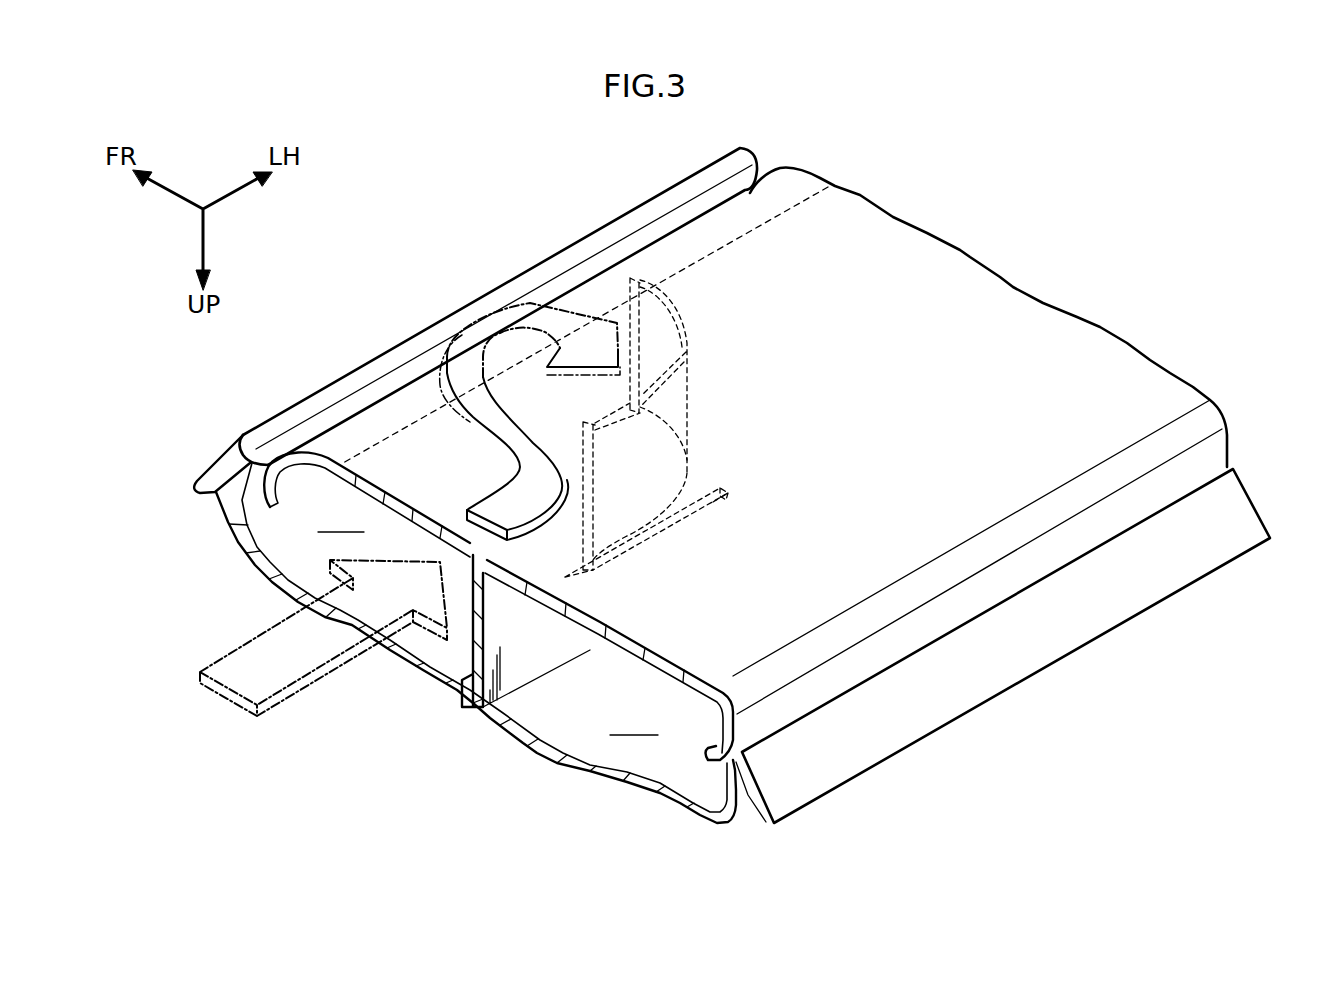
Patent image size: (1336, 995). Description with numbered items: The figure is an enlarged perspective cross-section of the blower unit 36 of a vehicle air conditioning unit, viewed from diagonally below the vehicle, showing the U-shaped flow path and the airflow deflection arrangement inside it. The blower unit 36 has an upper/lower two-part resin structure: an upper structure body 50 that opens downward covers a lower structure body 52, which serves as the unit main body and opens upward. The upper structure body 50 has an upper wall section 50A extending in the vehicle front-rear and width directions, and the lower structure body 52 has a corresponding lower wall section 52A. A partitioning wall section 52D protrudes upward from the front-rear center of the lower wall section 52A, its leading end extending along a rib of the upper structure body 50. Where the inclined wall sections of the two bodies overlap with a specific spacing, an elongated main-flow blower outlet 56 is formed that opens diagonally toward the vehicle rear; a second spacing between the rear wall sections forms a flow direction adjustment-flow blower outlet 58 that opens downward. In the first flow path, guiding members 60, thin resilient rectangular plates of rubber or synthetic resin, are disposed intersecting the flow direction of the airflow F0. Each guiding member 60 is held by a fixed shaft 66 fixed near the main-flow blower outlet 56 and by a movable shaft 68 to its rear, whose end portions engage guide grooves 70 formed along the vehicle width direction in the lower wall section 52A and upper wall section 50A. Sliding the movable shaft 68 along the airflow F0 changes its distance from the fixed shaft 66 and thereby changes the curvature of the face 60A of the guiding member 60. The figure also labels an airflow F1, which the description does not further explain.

The blower unit 36 is at (862, 167).
The upper structure body 50 is at (521, 752).
The upper wall section 50A is at (427, 683).
The lower structure body 52 is at (1091, 319).
The lower wall section 52A is at (957, 276).
The partitioning wall section 52D is at (517, 680).
The main-flow blower outlet 56 is at (655, 237).
The flow direction adjustment-flow blower outlet 58 is at (1038, 575).
The guiding member 60 is at (688, 403).
The face 60A is at (668, 340).
The fixed shaft 66 is at (640, 280).
The movable shaft 68 is at (593, 515).
The guide groove 70 is at (695, 493).
The airflow F0 is at (268, 680).
The transmitted load F1 is at (557, 320).